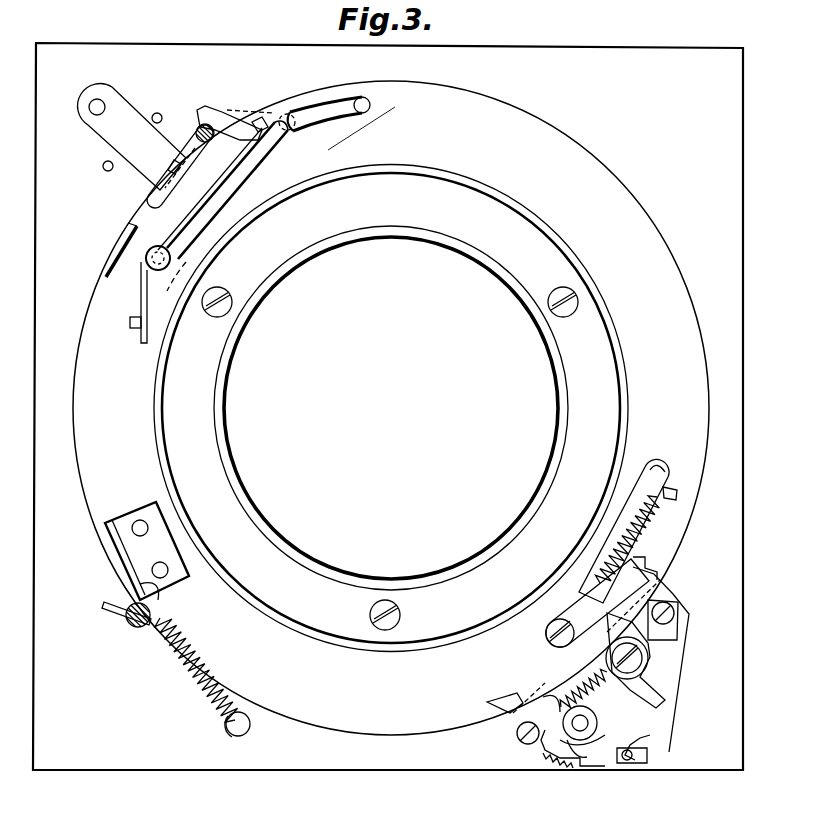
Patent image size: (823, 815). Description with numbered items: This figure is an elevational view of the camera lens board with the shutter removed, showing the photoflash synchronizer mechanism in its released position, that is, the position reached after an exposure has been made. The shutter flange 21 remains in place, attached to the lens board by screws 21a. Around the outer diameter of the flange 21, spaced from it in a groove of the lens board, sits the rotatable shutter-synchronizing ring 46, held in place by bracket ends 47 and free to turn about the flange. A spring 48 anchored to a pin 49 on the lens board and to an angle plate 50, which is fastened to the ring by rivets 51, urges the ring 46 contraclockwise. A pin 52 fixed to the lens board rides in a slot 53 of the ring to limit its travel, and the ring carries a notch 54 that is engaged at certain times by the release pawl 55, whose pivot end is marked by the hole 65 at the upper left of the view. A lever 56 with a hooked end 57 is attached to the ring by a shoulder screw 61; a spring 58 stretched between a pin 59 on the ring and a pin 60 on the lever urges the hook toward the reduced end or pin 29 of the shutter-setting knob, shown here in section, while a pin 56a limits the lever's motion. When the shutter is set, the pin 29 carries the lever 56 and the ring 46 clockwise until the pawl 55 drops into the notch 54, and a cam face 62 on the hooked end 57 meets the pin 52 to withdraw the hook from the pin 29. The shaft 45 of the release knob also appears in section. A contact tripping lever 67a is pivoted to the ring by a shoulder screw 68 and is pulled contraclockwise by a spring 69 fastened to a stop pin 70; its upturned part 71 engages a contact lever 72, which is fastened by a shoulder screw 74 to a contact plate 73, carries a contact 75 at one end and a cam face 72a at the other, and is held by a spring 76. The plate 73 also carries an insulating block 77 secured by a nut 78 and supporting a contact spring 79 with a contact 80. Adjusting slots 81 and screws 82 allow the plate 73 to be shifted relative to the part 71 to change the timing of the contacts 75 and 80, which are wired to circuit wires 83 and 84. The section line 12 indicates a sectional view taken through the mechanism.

The section line 12 is at (384, 98).
The shutter flange 21 is at (600, 352).
The screws 21a is at (390, 458).
The reduced end or pin 29 is at (192, 114).
The shaft 45 is at (132, 626).
The shutter-synchronizing ring 46 is at (574, 143).
The bracket ends 47 is at (653, 577).
The spring 48 is at (195, 680).
The pin 49 is at (226, 731).
The angle plate 50 is at (146, 543).
The rivets 51 is at (180, 593).
The pin 52 is at (358, 86).
The slot 53 is at (331, 108).
The notch 54 is at (117, 246).
The release pawl 55 is at (126, 112).
The lever 56 is at (228, 190).
The pin 56a is at (152, 166).
The hooked end 57 is at (217, 122).
The spring 58 is at (210, 193).
The pin 59 is at (137, 320).
The pin 60 is at (287, 114).
The shoulder screw 61 is at (193, 262).
The cam face 62 is at (257, 120).
The hole 65 is at (103, 85).
The contact tripping lever 67a is at (658, 450).
The shoulder screw 68 is at (545, 636).
The spring 69 is at (618, 531).
The stop pin 70 is at (676, 493).
The upturned part 71 is at (653, 562).
The contact lever 72 is at (657, 640).
The cam face 72a is at (579, 603).
The contact plate 73 is at (654, 760).
The shoulder screw 74 is at (643, 665).
The contact 75 is at (655, 724).
The spring 76 is at (581, 682).
The insulating block 77 is at (577, 745).
The nut 78 is at (587, 716).
The contact spring 79 is at (588, 790).
The contact 80 is at (655, 745).
The adjusting slots 81 is at (667, 630).
The screws 82 is at (674, 606).
The circuit wire 83 is at (627, 765).
The circuit wire 84 is at (550, 769).